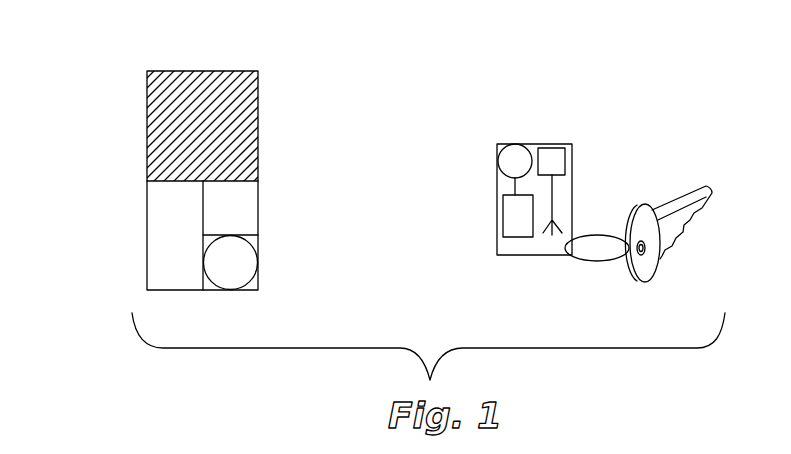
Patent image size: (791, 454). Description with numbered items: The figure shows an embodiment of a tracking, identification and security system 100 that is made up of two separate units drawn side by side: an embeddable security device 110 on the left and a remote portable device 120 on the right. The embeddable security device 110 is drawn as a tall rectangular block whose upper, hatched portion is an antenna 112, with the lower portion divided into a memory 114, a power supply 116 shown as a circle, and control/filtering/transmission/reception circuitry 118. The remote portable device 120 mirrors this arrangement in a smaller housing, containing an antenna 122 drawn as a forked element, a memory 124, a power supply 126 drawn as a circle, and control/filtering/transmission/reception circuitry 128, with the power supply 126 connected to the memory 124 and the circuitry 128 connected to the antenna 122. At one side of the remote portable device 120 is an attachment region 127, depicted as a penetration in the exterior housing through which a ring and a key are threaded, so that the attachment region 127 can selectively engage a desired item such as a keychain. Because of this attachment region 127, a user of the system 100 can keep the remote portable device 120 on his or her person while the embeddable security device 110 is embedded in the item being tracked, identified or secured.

The tracking, identification and security system 100 is at (435, 75).
The embeddable security device 110 is at (189, 158).
The antenna 112 is at (208, 71).
The memory 114 is at (258, 207).
The power supply 116 is at (230, 263).
The control/filtering/transmission/reception circuitry 118 is at (147, 235).
The remote portable device 120 is at (572, 203).
The antenna 122 is at (562, 222).
The memory 124 is at (522, 215).
The power supply 126 is at (515, 160).
The attachment region 127 is at (567, 249).
The control/filtering/transmission/reception circuitry 128 is at (553, 160).